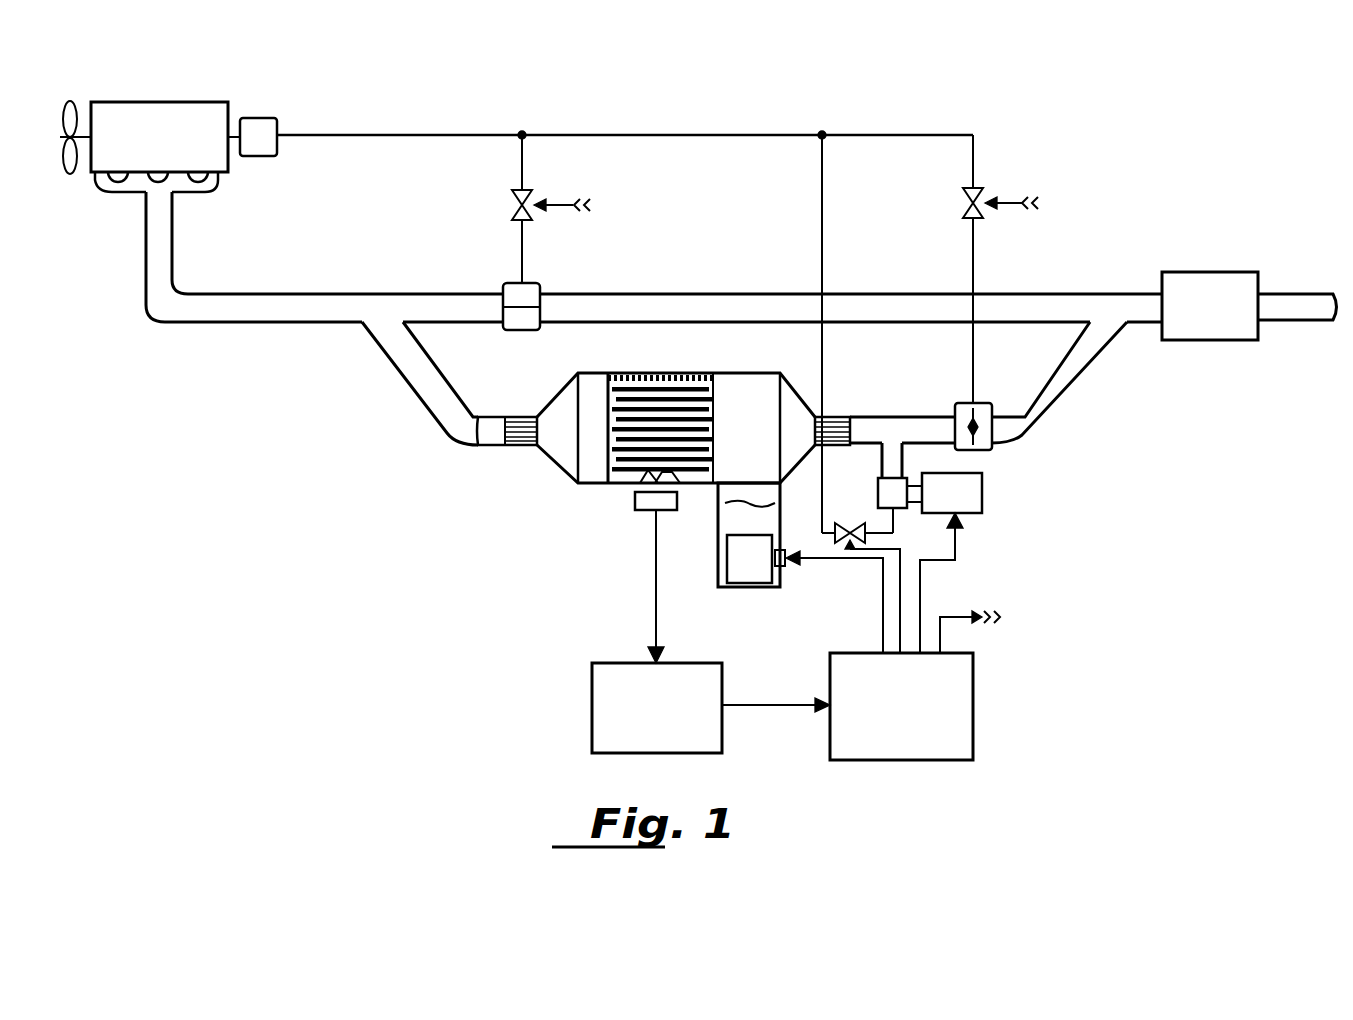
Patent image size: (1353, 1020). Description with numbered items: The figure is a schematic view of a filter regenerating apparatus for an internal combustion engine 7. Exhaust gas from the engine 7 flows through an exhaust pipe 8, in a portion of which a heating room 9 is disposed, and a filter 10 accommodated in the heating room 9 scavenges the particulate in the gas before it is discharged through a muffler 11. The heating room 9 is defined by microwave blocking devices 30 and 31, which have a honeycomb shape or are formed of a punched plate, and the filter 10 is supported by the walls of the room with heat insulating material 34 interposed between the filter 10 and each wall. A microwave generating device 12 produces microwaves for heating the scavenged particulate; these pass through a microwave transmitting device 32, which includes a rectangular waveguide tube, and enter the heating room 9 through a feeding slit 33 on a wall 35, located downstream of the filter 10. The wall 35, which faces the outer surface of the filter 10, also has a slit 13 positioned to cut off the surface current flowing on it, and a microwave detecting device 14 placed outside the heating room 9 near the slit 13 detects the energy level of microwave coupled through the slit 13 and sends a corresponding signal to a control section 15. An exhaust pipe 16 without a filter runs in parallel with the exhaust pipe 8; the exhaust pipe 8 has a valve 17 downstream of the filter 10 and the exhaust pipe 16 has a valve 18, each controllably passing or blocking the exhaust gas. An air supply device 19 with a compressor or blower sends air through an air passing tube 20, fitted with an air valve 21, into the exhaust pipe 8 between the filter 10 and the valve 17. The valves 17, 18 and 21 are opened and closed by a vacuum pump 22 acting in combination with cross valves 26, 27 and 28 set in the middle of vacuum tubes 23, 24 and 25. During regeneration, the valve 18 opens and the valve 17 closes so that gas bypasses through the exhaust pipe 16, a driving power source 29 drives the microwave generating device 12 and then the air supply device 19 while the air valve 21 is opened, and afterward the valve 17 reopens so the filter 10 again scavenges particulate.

The internal combustion engine 7 is at (185, 118).
The exhaust pipe 8 is at (270, 318).
The heating room 9 is at (590, 452).
The filter 10 is at (645, 445).
The muffler 11 is at (1205, 288).
The microwave generating device 12 is at (752, 572).
The slit 13 is at (638, 480).
The microwave detecting device 14 is at (652, 502).
The control section 15 is at (592, 705).
The exhaust pipe 16 is at (672, 300).
The valve 17 is at (985, 405).
The valve 18 is at (530, 291).
The air supply device 19 is at (975, 497).
The air passing tube 20 is at (880, 462).
The air valve 21 is at (878, 493).
The vacuum pump 22 is at (262, 122).
The vacuum tube 23 is at (515, 167).
The vacuum tube 24 is at (976, 158).
The vacuum tube 25 is at (826, 210).
The cross valve 26 is at (514, 207).
The cross valve 27 is at (965, 207).
The cross valve 28 is at (840, 540).
The driving power source 29 is at (975, 737).
The microwave blocking device 30 is at (518, 446).
The microwave blocking device 31 is at (832, 425).
The microwave transmitting device 32 is at (725, 530).
The feeding slit 33 is at (742, 483).
The heat insulating material 34 is at (676, 372).
The wall 35 is at (690, 486).